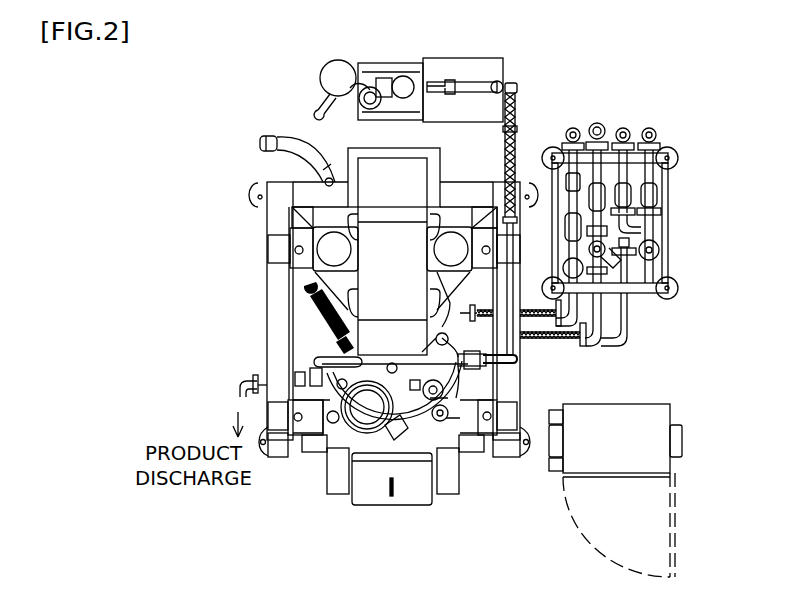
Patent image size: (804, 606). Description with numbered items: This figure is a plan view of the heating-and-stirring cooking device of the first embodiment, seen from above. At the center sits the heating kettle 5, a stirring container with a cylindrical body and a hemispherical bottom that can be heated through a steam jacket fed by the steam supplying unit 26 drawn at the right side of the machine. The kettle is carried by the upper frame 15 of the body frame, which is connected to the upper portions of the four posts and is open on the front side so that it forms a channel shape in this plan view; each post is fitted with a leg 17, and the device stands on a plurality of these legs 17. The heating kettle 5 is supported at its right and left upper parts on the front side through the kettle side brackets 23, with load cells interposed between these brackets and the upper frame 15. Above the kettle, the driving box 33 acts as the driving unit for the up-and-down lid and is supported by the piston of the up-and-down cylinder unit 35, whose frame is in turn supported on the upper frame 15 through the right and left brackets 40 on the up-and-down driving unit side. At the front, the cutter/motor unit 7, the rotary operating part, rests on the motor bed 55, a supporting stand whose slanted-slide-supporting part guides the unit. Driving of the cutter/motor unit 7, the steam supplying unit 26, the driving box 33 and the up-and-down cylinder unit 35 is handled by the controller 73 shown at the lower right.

The heating kettle 5 is at (400, 470).
The cutter/motor unit 7 is at (373, 490).
The upper frame 15 is at (267, 295).
The leg 17 is at (263, 440).
The kettle side bracket 23 is at (297, 403).
The steam supplying unit 26 is at (669, 139).
The driving box 33 is at (411, 187).
The up-and-down cylinder unit 35 is at (330, 225).
The bracket on the up-and-down driving unit side 40 is at (295, 238).
The motor bed 55 is at (327, 467).
The controller 73 is at (642, 437).